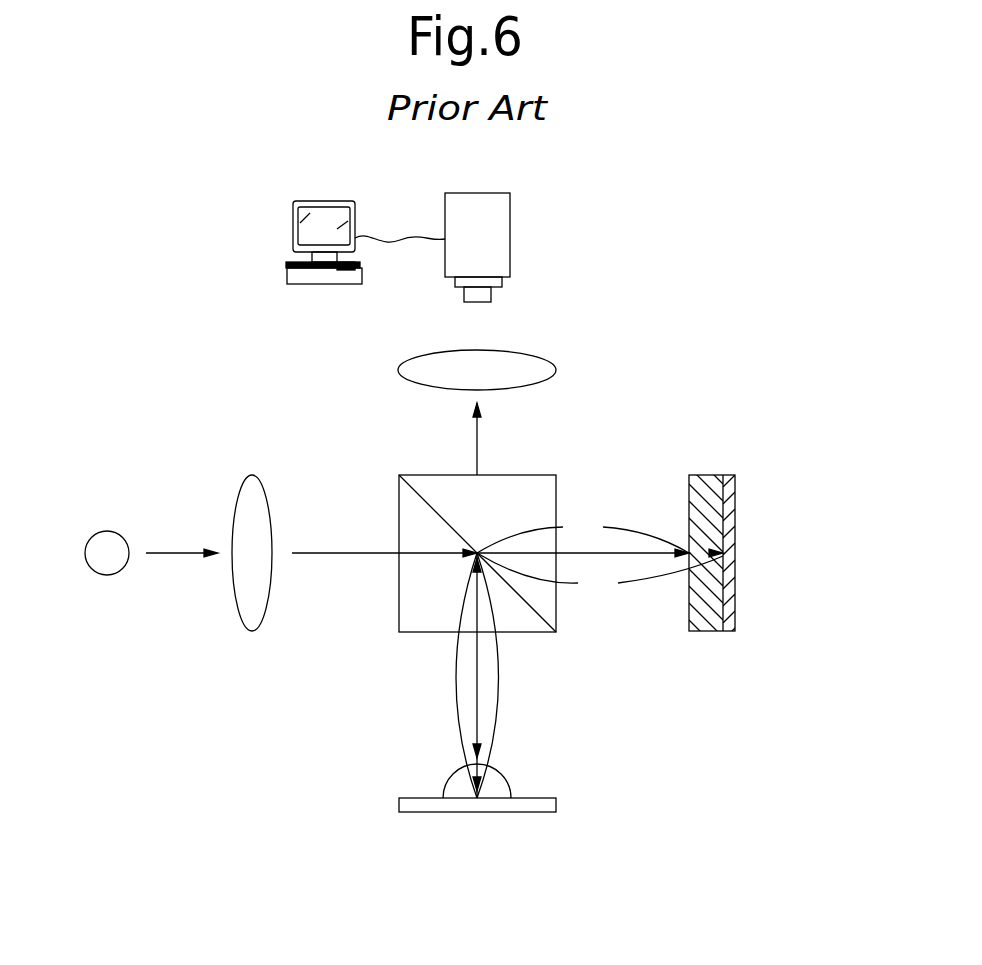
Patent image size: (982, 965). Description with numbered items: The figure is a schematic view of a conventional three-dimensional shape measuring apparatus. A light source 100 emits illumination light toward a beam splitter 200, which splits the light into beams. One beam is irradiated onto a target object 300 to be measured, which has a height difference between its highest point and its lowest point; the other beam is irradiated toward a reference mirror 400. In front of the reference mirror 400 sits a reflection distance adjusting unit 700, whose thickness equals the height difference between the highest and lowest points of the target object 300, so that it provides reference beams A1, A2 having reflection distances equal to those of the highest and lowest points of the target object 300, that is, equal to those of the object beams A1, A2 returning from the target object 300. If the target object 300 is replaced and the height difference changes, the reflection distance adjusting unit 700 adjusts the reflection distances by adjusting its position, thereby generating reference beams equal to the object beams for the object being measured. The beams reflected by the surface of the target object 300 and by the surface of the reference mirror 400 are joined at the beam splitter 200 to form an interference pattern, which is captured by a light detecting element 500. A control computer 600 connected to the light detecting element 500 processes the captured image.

The light source 100 is at (103, 576).
The beam splitter 200 is at (398, 612).
The target object 300 is at (520, 812).
The reference mirror 400 is at (735, 604).
The light detecting element 500 is at (510, 228).
The control computer 600 is at (293, 226).
The reflection distance adjusting unit 700 is at (699, 631).
The reference beam / object beam A1 is at (563, 657).
The reference beam / object beam A2 is at (600, 675).